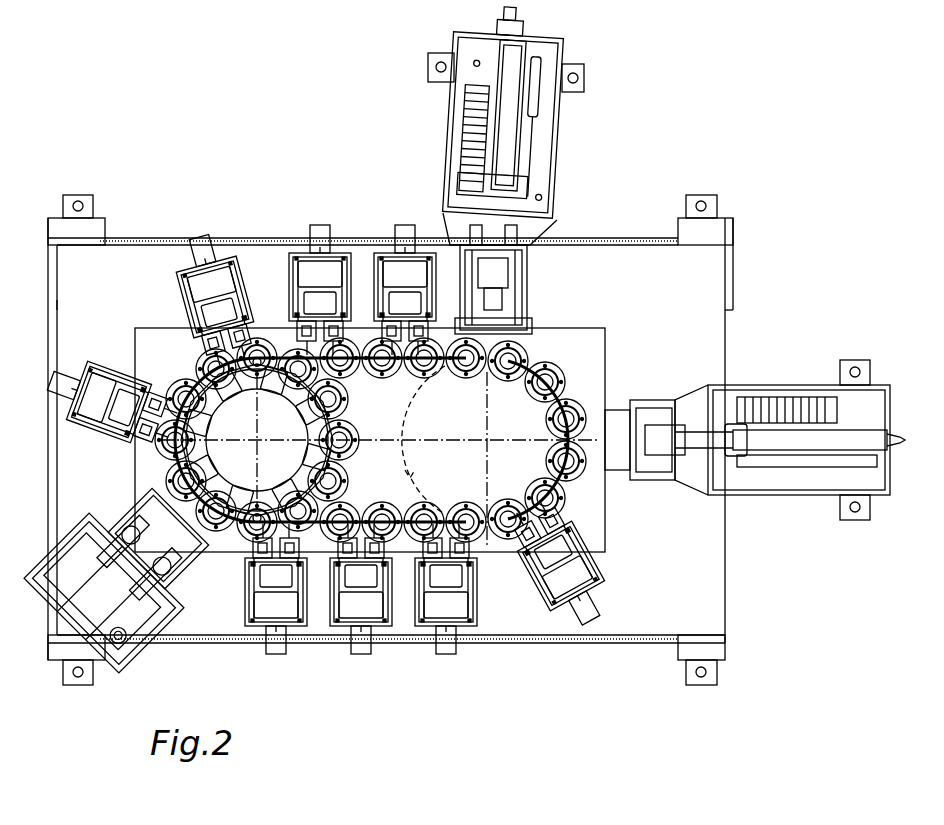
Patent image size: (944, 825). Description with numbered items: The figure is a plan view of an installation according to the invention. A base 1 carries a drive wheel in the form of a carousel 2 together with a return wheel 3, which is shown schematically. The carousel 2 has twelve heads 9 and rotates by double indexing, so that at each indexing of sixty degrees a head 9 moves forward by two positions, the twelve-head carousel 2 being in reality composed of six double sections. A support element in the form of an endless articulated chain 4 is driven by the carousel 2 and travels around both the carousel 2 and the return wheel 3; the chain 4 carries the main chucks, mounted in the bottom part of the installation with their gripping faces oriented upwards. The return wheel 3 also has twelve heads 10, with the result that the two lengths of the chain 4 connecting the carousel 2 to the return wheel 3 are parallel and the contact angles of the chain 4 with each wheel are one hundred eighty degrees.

The base 1 is at (597, 377).
The carousel 2 is at (265, 428).
The return wheel 3 is at (405, 555).
The endless articulated chain 4 is at (560, 340).
The heads 9 is at (165, 375).
The heads 10 is at (574, 367).